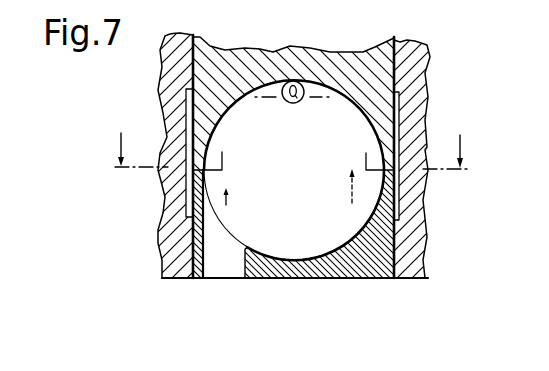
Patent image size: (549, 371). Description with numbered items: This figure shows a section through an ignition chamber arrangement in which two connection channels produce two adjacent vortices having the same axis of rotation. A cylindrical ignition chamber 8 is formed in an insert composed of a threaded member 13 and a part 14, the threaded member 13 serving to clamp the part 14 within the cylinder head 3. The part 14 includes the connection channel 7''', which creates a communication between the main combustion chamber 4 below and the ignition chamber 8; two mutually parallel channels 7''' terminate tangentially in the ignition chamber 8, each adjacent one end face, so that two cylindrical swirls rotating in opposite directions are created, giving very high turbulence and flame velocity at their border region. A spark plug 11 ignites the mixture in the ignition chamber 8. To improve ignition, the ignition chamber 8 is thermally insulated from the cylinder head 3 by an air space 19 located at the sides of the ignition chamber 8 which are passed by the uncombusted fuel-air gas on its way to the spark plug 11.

The cylinder head 3 is at (417, 237).
The main combustion chamber 4 is at (308, 312).
The connection channel 7''' is at (213, 240).
The ignition chamber 8 is at (306, 214).
The spark plug 11 is at (299, 101).
The threaded member 13 is at (337, 52).
The insert part 14 is at (362, 268).
The air space 19 is at (397, 193).